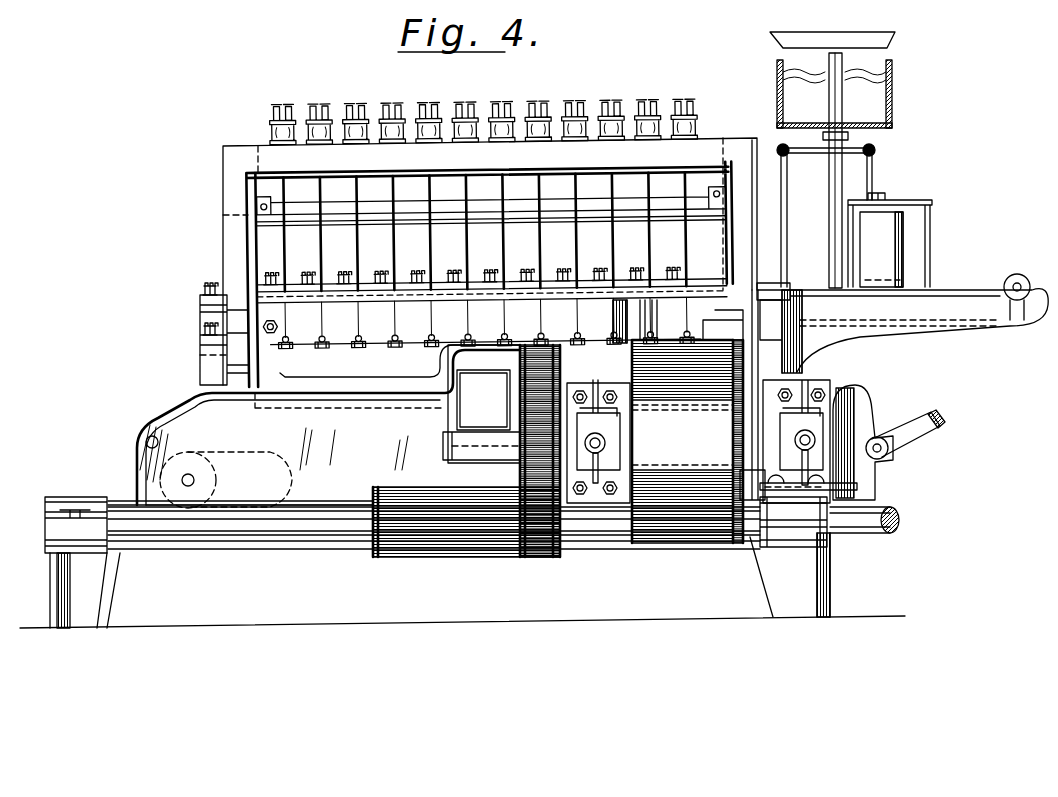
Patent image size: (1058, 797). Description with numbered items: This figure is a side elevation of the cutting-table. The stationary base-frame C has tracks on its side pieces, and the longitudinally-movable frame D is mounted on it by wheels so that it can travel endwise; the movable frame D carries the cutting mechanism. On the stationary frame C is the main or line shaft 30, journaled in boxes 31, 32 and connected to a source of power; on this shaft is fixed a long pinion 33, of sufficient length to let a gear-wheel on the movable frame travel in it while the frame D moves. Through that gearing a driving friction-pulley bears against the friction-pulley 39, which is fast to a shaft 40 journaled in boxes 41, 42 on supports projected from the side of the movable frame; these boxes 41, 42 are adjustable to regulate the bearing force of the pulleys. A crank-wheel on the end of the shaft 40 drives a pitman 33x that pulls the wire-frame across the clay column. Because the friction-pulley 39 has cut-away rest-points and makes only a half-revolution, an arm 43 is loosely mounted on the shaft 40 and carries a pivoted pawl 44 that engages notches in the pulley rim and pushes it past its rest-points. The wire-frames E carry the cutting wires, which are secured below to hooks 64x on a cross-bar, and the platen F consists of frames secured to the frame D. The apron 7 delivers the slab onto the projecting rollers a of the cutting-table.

The apron 7 is at (925, 300).
The shaft 30 is at (222, 541).
The box 31 is at (45, 532).
The box 32 is at (838, 535).
The long pinion 33 is at (428, 551).
The housing 33x is at (497, 432).
The friction-pulley 39 is at (682, 441).
The shaft 40 is at (724, 441).
The box 41 is at (598, 441).
The box 42 is at (808, 441).
The arm 43 is at (628, 360).
The pawl 44 is at (653, 330).
The hooks 64x is at (353, 348).
The wire-frames E is at (228, 241).
The platen F is at (257, 291).
The longitudinally-movable frame D is at (328, 425).
The base-frame C is at (120, 510).
The projecting rollers a is at (200, 480).